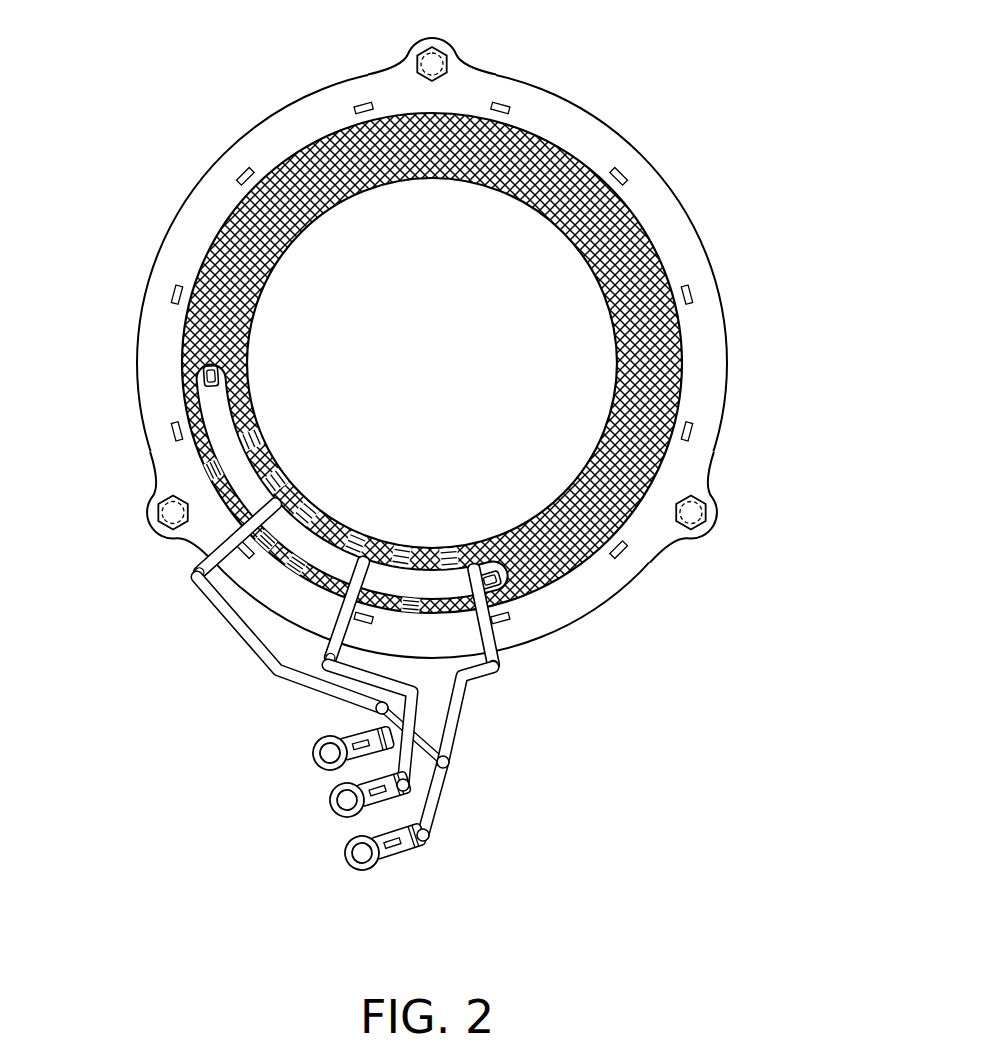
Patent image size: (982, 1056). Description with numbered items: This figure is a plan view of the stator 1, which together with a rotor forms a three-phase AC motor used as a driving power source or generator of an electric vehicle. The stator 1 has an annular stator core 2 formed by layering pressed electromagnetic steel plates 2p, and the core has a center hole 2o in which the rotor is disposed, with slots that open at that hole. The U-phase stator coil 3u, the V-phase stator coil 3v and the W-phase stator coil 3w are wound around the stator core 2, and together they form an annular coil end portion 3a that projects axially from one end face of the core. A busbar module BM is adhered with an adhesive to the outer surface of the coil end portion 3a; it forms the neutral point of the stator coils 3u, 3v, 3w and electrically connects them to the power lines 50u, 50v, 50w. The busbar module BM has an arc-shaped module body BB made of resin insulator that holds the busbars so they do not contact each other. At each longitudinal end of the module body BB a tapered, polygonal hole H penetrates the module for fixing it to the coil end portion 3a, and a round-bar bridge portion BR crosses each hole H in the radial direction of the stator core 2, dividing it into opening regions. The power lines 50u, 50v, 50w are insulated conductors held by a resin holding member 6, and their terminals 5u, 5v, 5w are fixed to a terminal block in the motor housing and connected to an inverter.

The stator 1 is at (376, 344).
The stator core 2 is at (461, 348).
The center hole 2o is at (455, 379).
The electromagnetic steel plates 2p is at (700, 465).
The stator coil 3u is at (432, 363).
The stator coil 3v is at (432, 363).
The stator coil 3w is at (604, 352).
The coil end portion 3a is at (303, 503).
The module body BB is at (230, 457).
The bridge portion BR is at (342, 517).
The hole H is at (205, 378).
The busbar module BM is at (248, 563).
The power line 50u is at (262, 672).
The power line 50v is at (414, 690).
The power line 50w is at (446, 727).
The terminal 5u is at (310, 753).
The terminal 5v is at (330, 800).
The terminal 5w is at (350, 860).
The holding member 6 is at (450, 765).